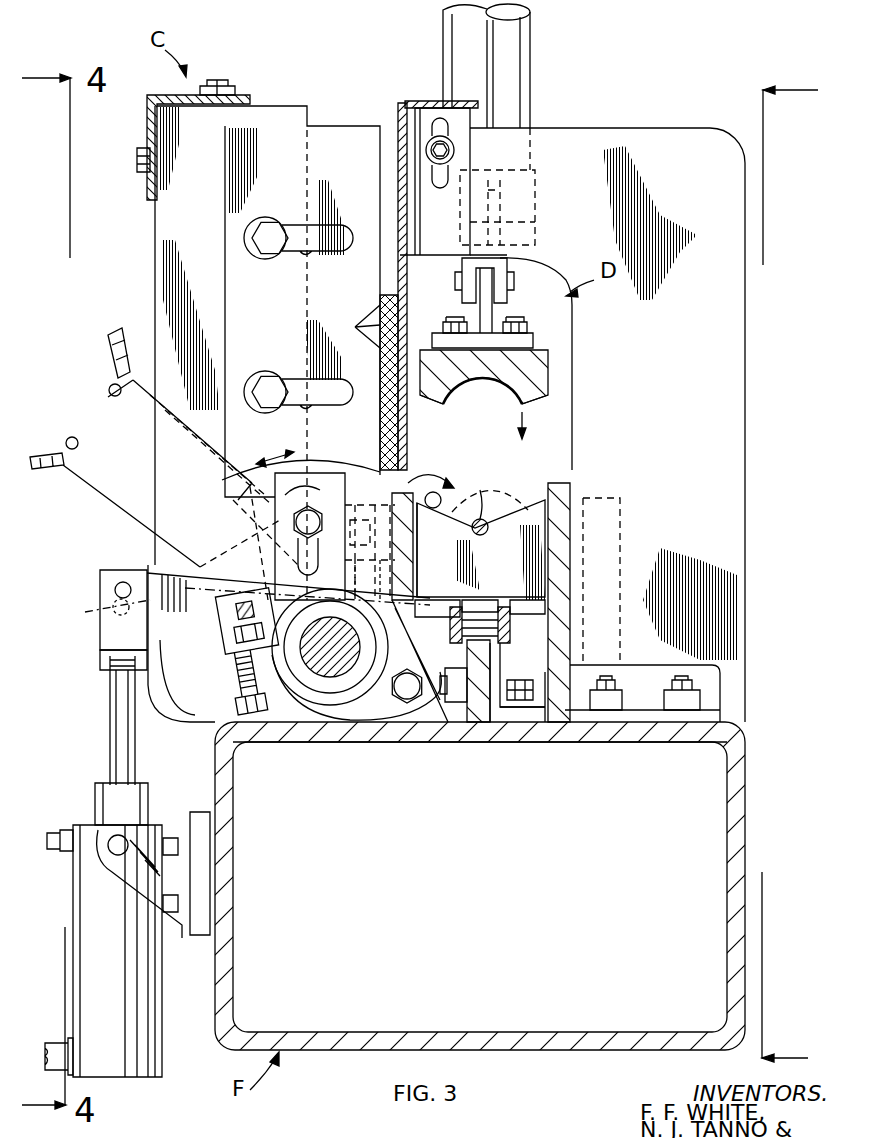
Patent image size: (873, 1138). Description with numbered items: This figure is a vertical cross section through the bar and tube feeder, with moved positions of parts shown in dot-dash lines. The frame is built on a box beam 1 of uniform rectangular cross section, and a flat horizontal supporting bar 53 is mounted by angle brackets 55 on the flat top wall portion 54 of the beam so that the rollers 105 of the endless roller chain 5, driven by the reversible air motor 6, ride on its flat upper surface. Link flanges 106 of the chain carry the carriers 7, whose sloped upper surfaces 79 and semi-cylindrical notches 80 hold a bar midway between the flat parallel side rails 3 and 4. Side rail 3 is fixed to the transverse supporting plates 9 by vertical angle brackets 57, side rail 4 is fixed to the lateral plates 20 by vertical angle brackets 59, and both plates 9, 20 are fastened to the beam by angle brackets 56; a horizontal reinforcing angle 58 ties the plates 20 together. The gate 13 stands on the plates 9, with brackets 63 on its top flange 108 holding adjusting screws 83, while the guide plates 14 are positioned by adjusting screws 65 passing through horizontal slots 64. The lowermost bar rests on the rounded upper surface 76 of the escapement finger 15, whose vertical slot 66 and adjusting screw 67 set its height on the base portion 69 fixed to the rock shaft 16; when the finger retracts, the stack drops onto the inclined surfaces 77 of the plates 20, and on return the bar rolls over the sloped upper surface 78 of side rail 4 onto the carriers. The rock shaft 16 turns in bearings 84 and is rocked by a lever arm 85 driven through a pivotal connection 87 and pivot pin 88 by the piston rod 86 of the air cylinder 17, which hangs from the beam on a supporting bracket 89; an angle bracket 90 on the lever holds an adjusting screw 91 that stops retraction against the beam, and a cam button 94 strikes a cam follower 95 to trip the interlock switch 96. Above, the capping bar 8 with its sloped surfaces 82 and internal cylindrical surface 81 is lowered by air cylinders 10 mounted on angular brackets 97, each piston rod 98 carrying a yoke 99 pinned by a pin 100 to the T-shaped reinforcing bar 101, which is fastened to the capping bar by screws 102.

The box beam 1 is at (745, 806).
The side rail 3 is at (570, 490).
The side rail 4 is at (413, 586).
The roller chain 5 is at (503, 654).
The air motor 6 is at (774, 573).
The carrier 7 is at (548, 532).
The capping bar 8 is at (550, 372).
The supporting plate 9 is at (640, 128).
The air cylinder 10 is at (522, 66).
The gate 13 is at (407, 273).
The guide plate 14 is at (330, 128).
The escapement finger 15 is at (268, 532).
The rock shaft 16 is at (338, 668).
The air cylinder 17 is at (150, 1010).
The lateral plate 20 is at (155, 224).
The supporting bar 53 is at (467, 658).
The top wall portion 54 is at (442, 742).
The angle bracket 55 is at (511, 715).
The angle bracket 56 is at (723, 688).
The vertical angle bracket 57 is at (622, 560).
The reinforcing angle 58 is at (148, 132).
The vertical angle bracket 59 is at (414, 542).
The bracket 63 is at (470, 118).
The horizontal slot 64 is at (336, 226).
The adjusting screw 65 is at (268, 220).
The vertical slot 66 is at (305, 567).
The adjusting screw 67 is at (335, 536).
The base portion 69 is at (397, 621).
The rounded upper surface 76 is at (340, 467).
The inclined surface 77 is at (325, 492).
The sloped upper surface 78 is at (430, 492).
The sloped upper surface 79 is at (522, 508).
The semi-cylindrical notch 80 is at (490, 531).
The internal cylindrical surface 81 is at (494, 404).
The sloped surface 82 is at (440, 404).
The adjusting screw 83 is at (455, 150).
The bearing 84 is at (367, 708).
The lever arm 85 is at (162, 570).
The piston rod 86 is at (112, 704).
The pivotal connection 87 is at (100, 652).
The pivot pin 88 is at (105, 597).
The supporting bracket 89 is at (150, 825).
The angle bracket 90 is at (232, 620).
The adjusting screw 91 is at (222, 675).
The button 94 is at (295, 593).
The cam follower 95 is at (350, 548).
The interlock switch 96 is at (104, 428).
The angular bracket 97 is at (535, 206).
The piston rod 98 is at (505, 226).
The yoke 99 is at (510, 262).
The pin 100 is at (515, 282).
The reinforcing bar 101 is at (495, 312).
The screw 102 is at (452, 322).
The roller 105 is at (474, 615).
The link flange 106 is at (505, 625).
The top flange 108 is at (432, 101).